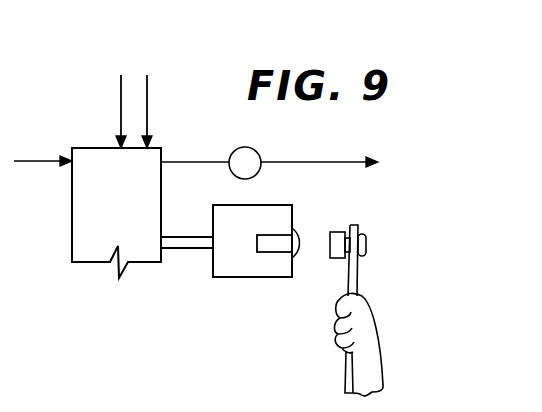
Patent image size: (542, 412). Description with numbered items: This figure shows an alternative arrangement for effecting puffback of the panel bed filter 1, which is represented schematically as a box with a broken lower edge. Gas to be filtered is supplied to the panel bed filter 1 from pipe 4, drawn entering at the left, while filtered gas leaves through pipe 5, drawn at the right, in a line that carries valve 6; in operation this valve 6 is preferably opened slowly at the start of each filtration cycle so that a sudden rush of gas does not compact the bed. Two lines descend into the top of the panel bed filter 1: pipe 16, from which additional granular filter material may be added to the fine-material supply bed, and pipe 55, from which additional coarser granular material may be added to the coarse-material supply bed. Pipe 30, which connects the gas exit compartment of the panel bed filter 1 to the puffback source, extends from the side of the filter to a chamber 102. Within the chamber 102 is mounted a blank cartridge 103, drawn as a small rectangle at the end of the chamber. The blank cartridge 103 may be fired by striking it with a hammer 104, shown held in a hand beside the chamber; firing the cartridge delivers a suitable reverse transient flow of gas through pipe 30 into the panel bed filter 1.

The panel bed filter 1 is at (62, 226).
The pipe 4 is at (43, 158).
The pipe 5 is at (217, 130).
The valve 6 is at (257, 148).
The pipe 16 is at (120, 90).
The pipe 55 is at (149, 90).
The pipe 30 is at (183, 234).
The chamber 102 is at (279, 280).
The blank cartridge 103 is at (270, 255).
The hammer 104 is at (360, 265).